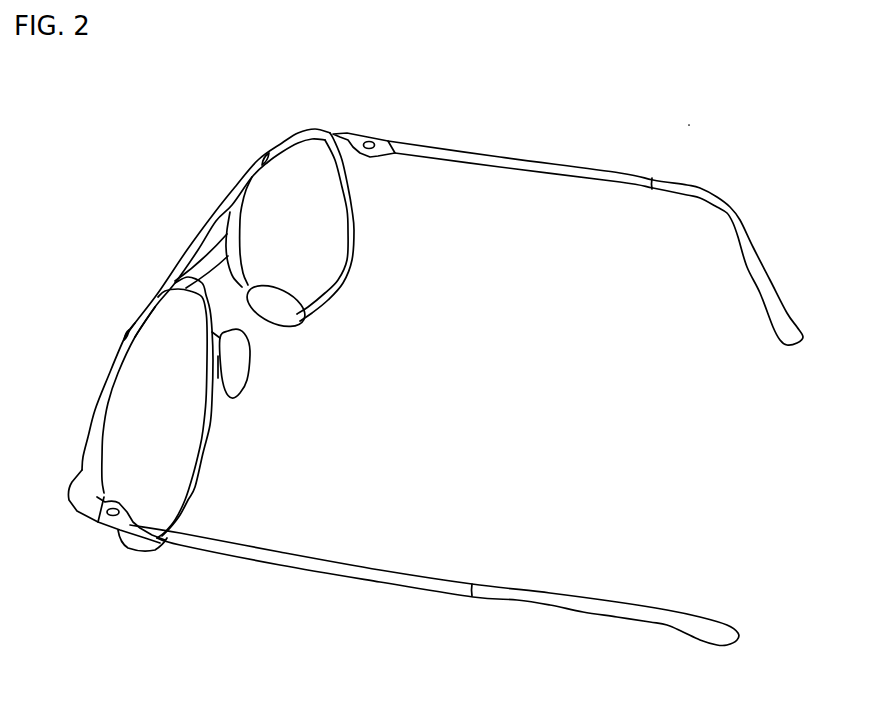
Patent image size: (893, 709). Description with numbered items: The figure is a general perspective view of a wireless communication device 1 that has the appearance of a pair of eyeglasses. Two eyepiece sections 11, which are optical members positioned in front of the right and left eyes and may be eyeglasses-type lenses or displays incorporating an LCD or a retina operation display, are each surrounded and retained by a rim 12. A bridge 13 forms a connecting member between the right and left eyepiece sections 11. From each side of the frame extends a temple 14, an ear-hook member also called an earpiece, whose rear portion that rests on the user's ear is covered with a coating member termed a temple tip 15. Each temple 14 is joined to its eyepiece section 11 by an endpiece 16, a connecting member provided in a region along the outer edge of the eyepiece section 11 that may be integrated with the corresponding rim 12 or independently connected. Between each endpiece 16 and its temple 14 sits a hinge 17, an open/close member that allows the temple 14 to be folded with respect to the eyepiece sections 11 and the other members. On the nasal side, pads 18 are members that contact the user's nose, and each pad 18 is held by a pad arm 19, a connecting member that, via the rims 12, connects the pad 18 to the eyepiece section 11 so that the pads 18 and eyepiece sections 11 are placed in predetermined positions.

The wireless communication device 1 is at (704, 120).
The eyepiece section 11 is at (141, 420).
The rim 12 is at (108, 375).
The bridge 13 is at (197, 237).
The temple 14 is at (371, 580).
The temple tip 15 is at (740, 229).
The endpiece 16 is at (70, 500).
The hinge 17 is at (371, 158).
The pad 18 is at (290, 323).
The pad arm 19 is at (221, 360).